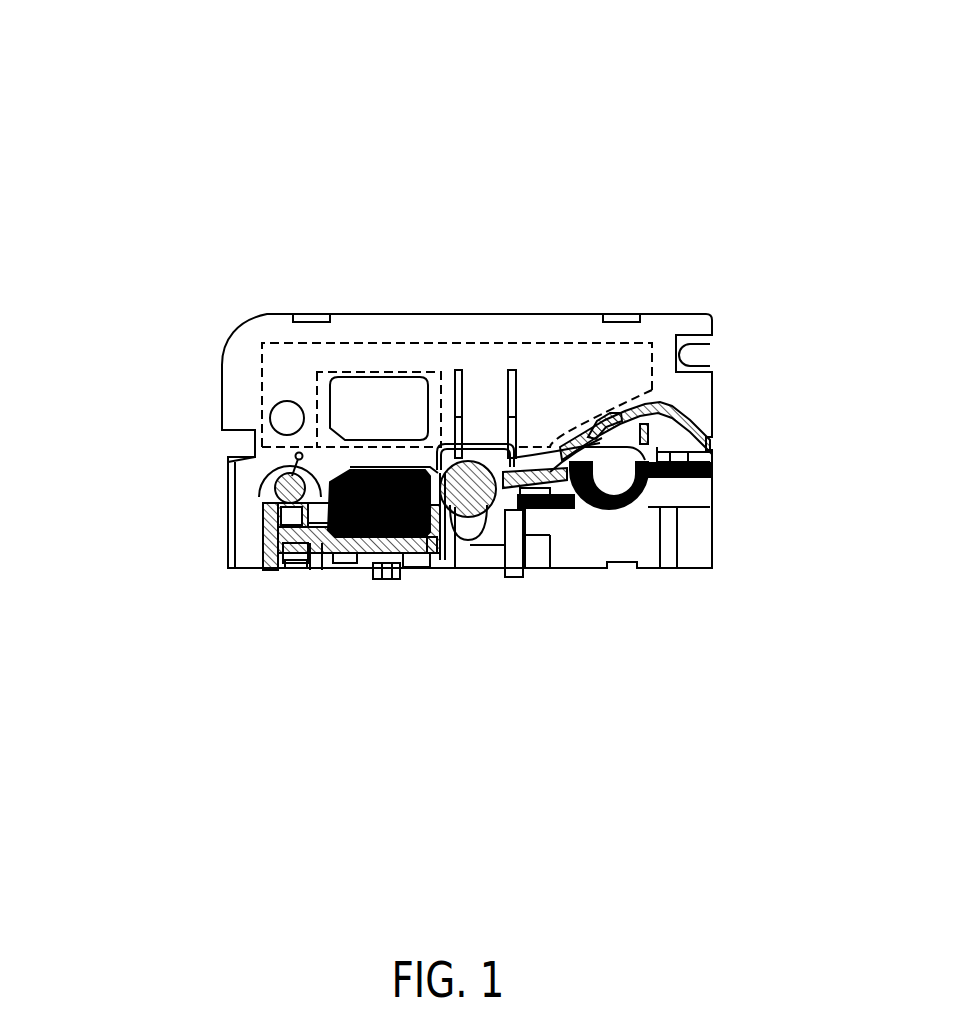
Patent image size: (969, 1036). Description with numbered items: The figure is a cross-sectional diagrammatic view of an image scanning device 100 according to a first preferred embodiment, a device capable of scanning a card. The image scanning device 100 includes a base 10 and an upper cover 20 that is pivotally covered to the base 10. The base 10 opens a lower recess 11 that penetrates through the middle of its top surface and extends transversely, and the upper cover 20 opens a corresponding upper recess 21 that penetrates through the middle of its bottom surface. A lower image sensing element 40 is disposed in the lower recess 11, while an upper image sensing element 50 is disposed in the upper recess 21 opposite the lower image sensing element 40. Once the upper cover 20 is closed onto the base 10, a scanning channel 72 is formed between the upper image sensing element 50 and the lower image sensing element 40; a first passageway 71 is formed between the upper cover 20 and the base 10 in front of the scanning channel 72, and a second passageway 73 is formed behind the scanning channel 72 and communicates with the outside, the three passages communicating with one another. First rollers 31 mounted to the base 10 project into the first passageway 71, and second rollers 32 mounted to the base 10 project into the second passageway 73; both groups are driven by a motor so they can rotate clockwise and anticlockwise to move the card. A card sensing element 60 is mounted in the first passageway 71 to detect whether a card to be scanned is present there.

The image scanning device 100 is at (100, 40).
The base 10 is at (585, 555).
The lower recess 11 is at (418, 575).
The upper cover 20 is at (262, 367).
The upper recess 21 is at (327, 397).
The first rollers 31 is at (272, 488).
The second rollers 32 is at (465, 520).
The lower image sensing element 40 is at (349, 568).
The upper image sensing element 50 is at (368, 388).
The card sensing element 60 is at (312, 568).
The first passageway 71 is at (295, 456).
The scanning channel 72 is at (382, 465).
The second passageway 73 is at (697, 455).